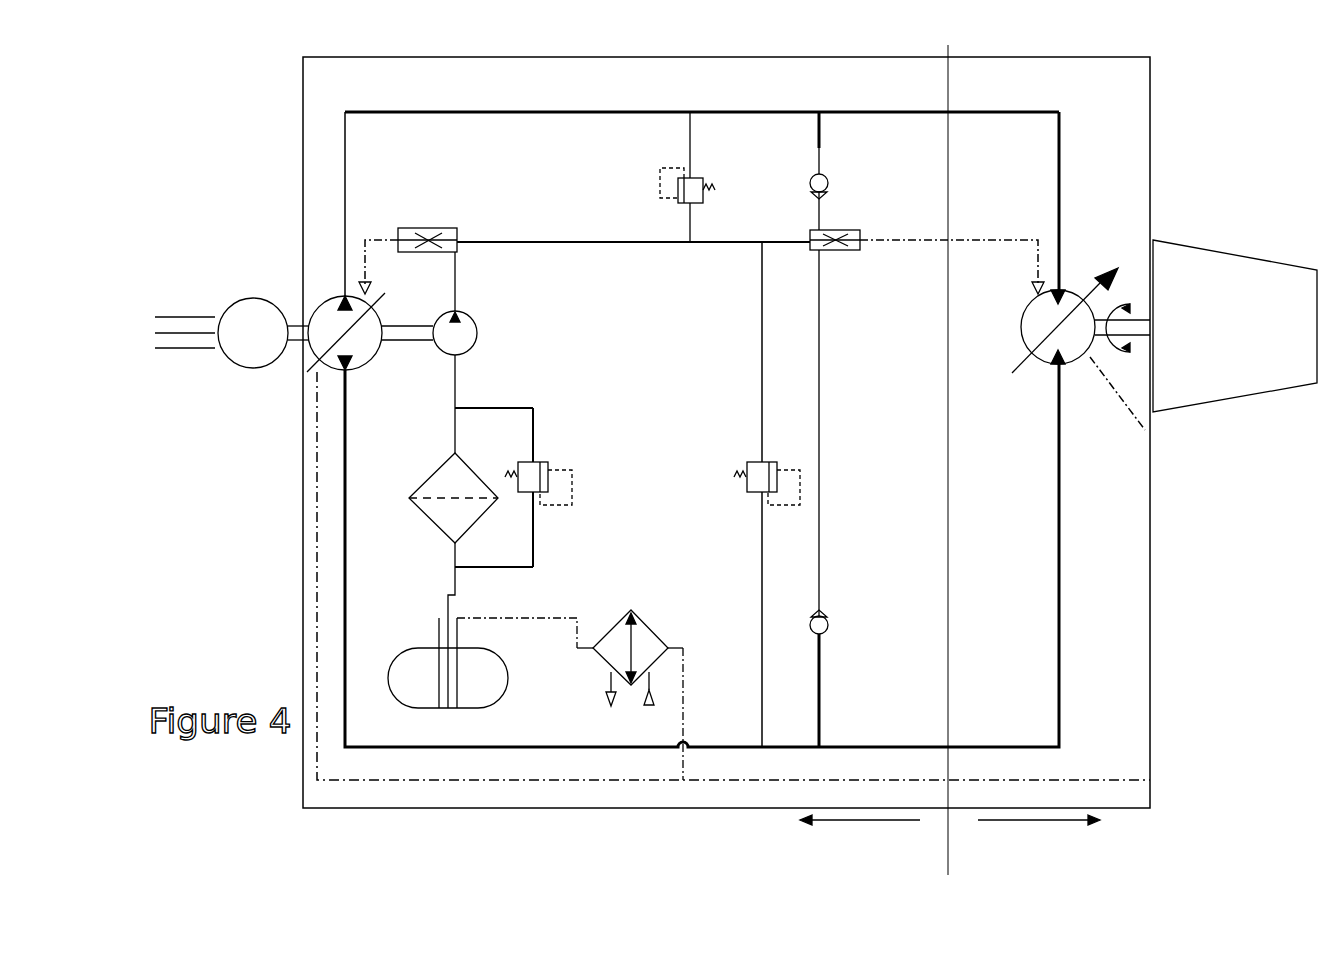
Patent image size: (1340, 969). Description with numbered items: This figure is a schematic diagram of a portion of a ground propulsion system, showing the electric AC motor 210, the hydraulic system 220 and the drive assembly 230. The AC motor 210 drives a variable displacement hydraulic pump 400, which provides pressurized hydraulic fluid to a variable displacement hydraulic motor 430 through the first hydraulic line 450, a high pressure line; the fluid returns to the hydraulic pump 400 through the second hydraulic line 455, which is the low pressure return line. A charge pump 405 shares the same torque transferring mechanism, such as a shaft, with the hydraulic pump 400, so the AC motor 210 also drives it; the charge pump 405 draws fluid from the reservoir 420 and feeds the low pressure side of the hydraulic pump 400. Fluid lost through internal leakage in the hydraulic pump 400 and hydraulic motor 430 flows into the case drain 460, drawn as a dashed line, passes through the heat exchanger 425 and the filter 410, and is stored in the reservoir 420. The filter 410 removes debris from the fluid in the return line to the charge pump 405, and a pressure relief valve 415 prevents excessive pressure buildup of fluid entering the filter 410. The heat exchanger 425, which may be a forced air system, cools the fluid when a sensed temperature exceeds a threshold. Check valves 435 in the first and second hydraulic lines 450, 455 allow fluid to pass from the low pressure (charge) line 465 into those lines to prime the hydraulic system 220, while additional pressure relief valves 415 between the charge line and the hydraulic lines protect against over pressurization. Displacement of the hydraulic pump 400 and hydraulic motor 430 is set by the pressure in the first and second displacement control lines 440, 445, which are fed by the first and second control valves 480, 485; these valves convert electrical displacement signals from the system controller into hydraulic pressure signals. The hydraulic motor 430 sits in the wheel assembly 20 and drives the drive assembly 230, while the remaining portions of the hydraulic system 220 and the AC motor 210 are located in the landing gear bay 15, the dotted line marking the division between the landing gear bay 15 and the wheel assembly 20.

The hydraulic system 220 is at (708, 426).
The landing gear bay 15 is at (774, 833).
The wheel assembly 20 is at (1119, 833).
The AC motor 210 is at (223, 334).
The drive assembly 230 is at (1235, 326).
The variable displacement hydraulic pump 400 is at (370, 340).
The charge pump 405 is at (492, 352).
The filter 410 is at (441, 572).
The pressure relief valve 415 is at (627, 429).
The reservoir 420 is at (448, 685).
The heat exchanger 425 is at (595, 668).
The variable displacement hydraulic motor 430 is at (1052, 320).
The check valve 435 is at (851, 429).
The first displacement control line 440 is at (405, 202).
The second displacement control line 445 is at (952, 212).
The first hydraulic line 450 is at (702, 179).
The second hydraulic line 455 is at (702, 555).
The case drain 460 is at (732, 568).
The low pressure (charge) line 465 is at (633, 262).
The first control valve 480 is at (458, 202).
The second control valve 485 is at (865, 285).